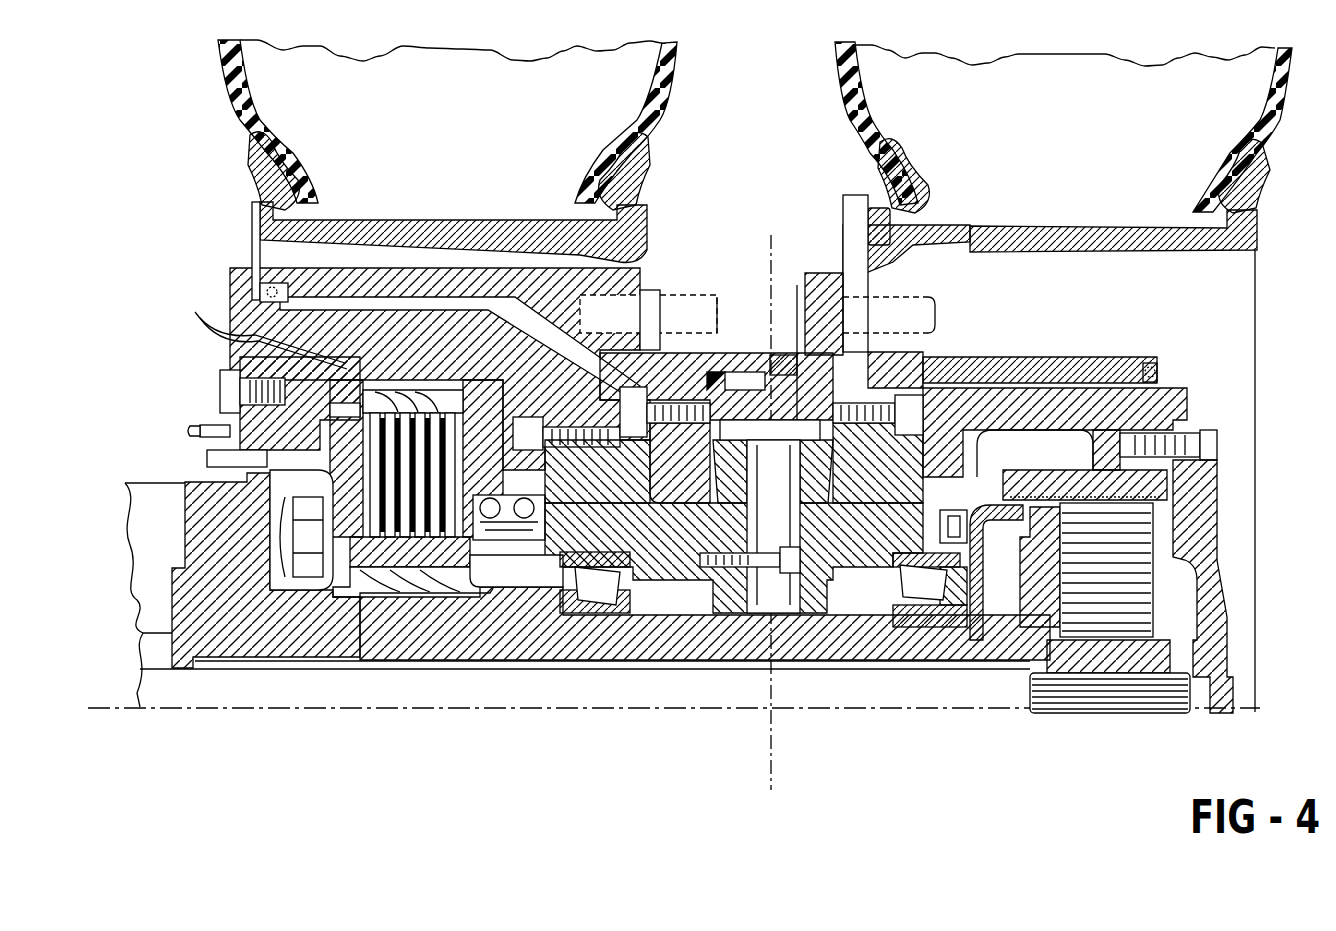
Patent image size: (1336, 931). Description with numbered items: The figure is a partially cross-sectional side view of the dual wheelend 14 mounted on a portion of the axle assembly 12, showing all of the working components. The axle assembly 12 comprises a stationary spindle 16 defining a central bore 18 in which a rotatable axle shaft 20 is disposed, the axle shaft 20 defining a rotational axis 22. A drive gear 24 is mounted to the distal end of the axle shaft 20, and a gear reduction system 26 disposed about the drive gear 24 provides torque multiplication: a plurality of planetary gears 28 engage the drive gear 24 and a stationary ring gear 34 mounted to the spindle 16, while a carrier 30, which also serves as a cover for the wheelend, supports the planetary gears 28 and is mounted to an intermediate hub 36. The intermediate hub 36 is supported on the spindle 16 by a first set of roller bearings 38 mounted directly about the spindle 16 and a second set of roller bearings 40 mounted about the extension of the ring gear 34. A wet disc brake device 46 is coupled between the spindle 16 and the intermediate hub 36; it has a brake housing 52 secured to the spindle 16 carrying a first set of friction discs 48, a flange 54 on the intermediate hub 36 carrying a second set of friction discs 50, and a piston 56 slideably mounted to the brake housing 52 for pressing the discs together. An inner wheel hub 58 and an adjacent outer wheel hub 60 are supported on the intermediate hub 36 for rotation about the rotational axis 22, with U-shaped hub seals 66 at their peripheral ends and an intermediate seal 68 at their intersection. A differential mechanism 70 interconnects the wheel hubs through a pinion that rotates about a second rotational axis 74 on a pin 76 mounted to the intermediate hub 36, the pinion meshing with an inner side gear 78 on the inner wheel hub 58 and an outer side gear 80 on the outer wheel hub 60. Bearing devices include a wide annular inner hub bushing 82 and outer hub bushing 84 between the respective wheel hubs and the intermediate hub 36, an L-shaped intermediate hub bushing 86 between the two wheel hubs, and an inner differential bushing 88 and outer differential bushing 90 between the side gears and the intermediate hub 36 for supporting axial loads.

The axle assembly 12 is at (216, 726).
The dual wheelend 14 is at (178, 382).
The stationary spindle 16 is at (197, 597).
The central bore 18 is at (233, 667).
The axle shaft 20 is at (484, 690).
The rotational axis 22 is at (855, 713).
The drive gear 24 is at (1172, 664).
The gear reduction system 26 is at (1158, 592).
The planetary gears 28 is at (1140, 622).
The carrier 30 is at (1197, 525).
The stationary ring gear 34 is at (1127, 487).
The intermediate hub 36 is at (625, 575).
The first set of roller bearings 38 is at (602, 578).
The second set of roller bearings 40 is at (930, 618).
The wet disc brake device 46 is at (320, 515).
The first set of friction discs 48 is at (265, 327).
The second set of friction discs 50 is at (405, 537).
The brake housing 52 is at (485, 412).
The flange 54 is at (447, 545).
The piston 56 is at (313, 453).
The inner wheel hub 58 is at (430, 277).
The outer wheel hub 60 is at (995, 367).
The hub seals 66 is at (262, 290).
The intermediate seal 68 is at (783, 352).
The differential mechanism 70 is at (813, 618).
The second rotational axis 74 is at (766, 252).
The pin 76 is at (760, 580).
The inner side gear 78 is at (657, 393).
The outer side gear 80 is at (928, 397).
The inner hub bushing 82 is at (373, 303).
The outer hub bushing 84 is at (1065, 370).
The intermediate hub bushing 86 is at (740, 377).
The inner differential bushing 88 is at (640, 452).
The outer differential bushing 90 is at (947, 462).